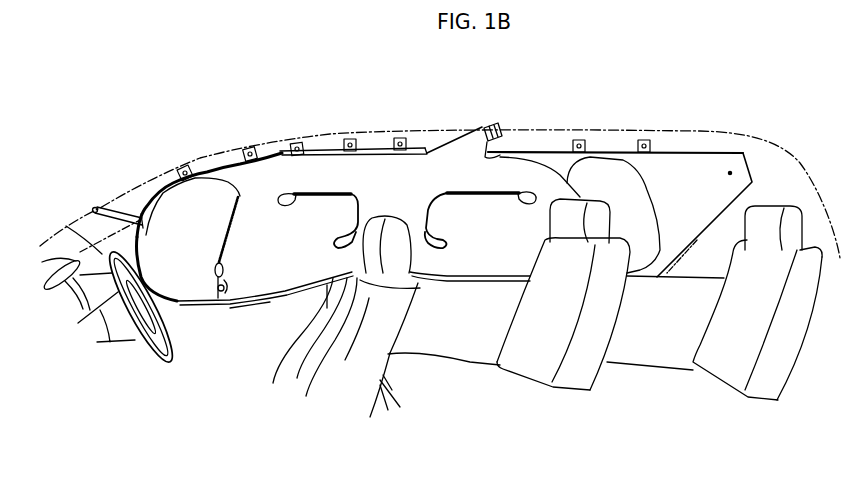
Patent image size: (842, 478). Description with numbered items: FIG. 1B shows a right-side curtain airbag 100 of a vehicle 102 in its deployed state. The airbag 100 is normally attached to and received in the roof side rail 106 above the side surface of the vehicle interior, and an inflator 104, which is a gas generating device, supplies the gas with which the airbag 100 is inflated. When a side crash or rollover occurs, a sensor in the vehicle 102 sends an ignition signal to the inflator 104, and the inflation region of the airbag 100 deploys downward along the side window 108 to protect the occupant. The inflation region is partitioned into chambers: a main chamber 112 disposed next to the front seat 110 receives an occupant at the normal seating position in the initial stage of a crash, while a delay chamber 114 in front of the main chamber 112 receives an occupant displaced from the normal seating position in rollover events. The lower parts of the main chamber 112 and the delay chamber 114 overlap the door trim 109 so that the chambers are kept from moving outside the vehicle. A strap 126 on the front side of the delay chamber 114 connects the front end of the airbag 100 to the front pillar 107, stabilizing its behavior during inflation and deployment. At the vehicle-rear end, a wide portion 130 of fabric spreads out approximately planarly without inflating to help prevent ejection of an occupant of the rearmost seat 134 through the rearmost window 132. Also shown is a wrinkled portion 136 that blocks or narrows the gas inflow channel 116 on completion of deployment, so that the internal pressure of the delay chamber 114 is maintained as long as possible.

The airbag 100 is at (532, 138).
The vehicle 102 is at (765, 140).
The inflator 104 is at (493, 124).
The roof side rail 106 is at (610, 140).
The front pillar 107 is at (154, 183).
The side window 108 is at (100, 256).
The door trim 109 is at (278, 312).
The front seat 110 is at (343, 392).
The main chamber 112 is at (251, 300).
The delay chamber 114 is at (184, 281).
The gas inflow channel 116 is at (233, 284).
The strap 126 is at (123, 212).
The wide portion 130 is at (688, 187).
The rearmost window 132 is at (663, 281).
The rearmost seat 134 is at (769, 376).
The wrinkled portion 136 is at (224, 302).